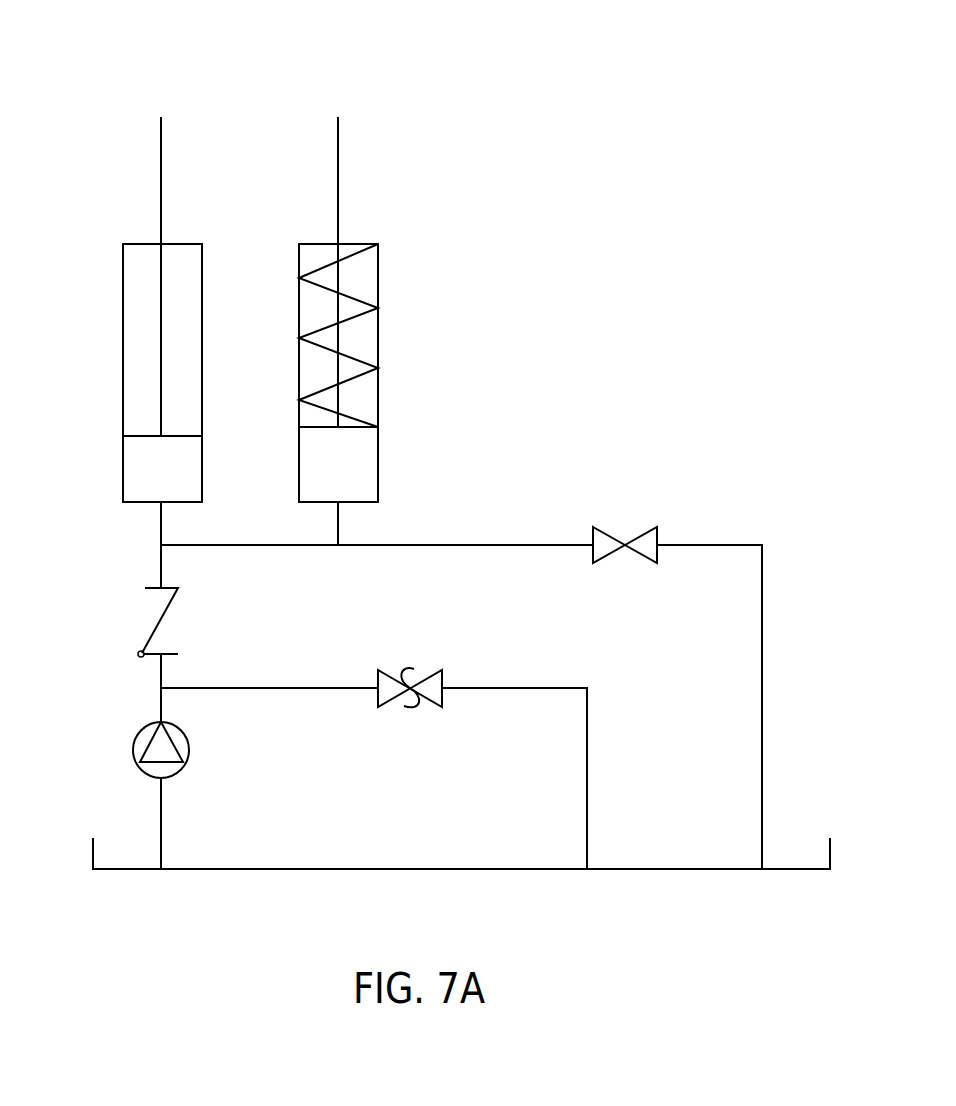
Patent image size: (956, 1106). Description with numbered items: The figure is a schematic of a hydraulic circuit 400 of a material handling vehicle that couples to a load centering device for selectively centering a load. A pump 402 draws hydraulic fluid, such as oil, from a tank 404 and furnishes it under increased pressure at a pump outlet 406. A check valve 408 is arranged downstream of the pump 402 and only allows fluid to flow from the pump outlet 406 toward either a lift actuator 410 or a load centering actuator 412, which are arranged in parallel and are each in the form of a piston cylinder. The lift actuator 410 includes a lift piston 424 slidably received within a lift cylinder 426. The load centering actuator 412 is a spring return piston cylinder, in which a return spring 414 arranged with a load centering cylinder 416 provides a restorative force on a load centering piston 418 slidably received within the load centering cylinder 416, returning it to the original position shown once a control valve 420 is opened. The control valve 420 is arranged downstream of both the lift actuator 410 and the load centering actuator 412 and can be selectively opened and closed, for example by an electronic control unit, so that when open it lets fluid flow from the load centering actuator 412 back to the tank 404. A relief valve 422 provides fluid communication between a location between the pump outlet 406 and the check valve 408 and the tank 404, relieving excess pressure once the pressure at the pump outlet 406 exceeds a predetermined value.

The hydraulic circuit 400 is at (484, 79).
The pump 402 is at (180, 770).
The tank 404 is at (405, 869).
The pump outlet 406 is at (163, 725).
The check valve 408 is at (167, 610).
The lift actuator 410 is at (98, 405).
The load centering actuator 412 is at (424, 298).
The return spring 414 is at (378, 392).
The load centering cylinder 416 is at (378, 462).
The load centering piston 418 is at (338, 195).
The control valve 420 is at (626, 543).
The relief valve 422 is at (425, 682).
The lift piston 424 is at (161, 195).
The lift cylinder 426 is at (123, 335).